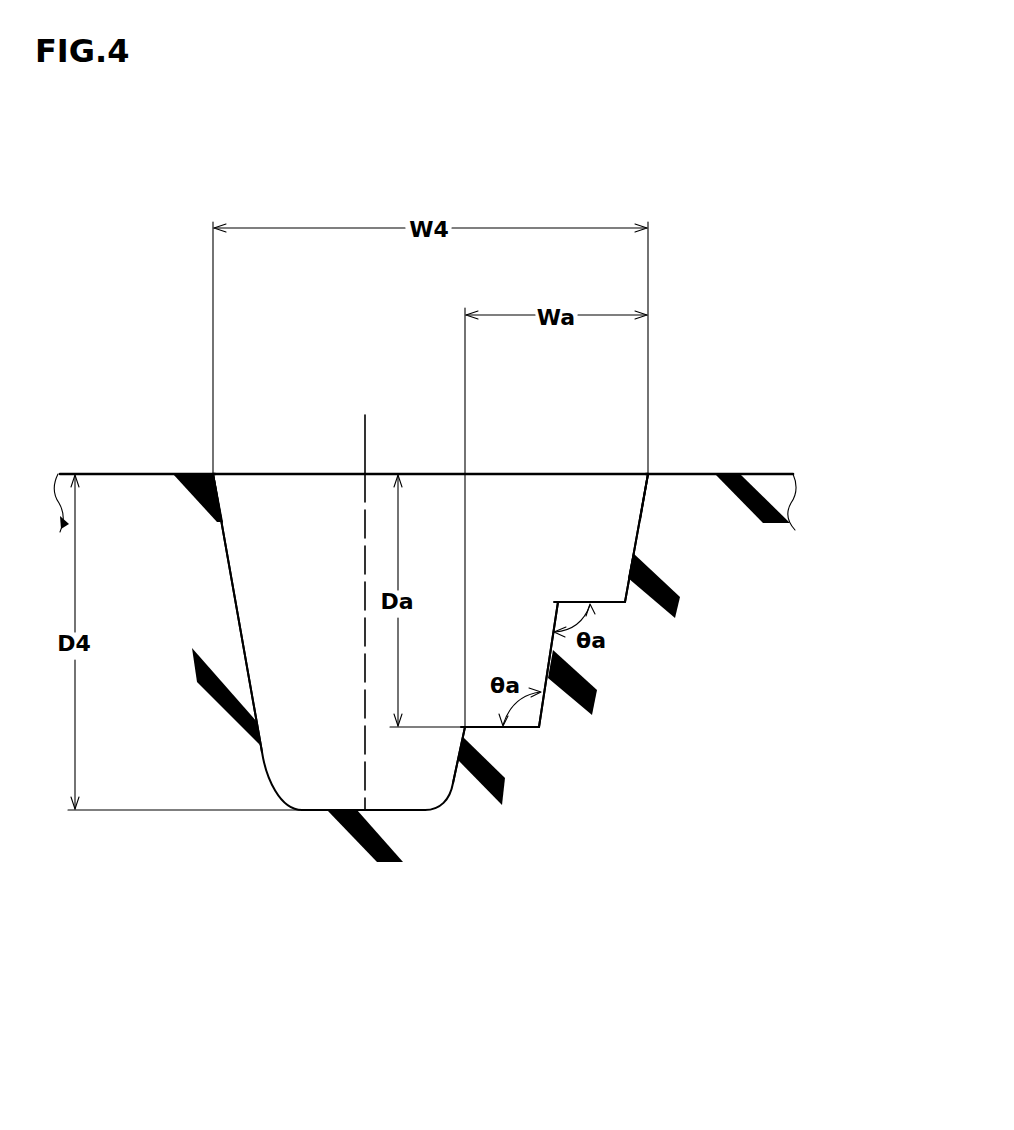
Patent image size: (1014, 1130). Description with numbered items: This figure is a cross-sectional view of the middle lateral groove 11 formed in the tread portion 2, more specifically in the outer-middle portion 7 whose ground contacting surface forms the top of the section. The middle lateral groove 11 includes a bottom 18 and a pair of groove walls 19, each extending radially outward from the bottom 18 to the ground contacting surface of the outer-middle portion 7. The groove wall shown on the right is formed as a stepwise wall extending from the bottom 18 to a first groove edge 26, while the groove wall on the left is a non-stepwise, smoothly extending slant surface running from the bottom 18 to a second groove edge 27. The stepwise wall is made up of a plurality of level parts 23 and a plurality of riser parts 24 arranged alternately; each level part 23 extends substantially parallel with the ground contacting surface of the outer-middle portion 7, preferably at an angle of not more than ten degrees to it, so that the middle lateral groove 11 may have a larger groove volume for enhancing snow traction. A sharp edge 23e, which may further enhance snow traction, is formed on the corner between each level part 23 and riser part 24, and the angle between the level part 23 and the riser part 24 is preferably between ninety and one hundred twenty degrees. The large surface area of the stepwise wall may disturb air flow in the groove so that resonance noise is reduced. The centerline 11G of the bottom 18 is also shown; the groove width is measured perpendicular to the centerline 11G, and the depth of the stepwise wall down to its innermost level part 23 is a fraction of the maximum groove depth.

The tread portion 2 is at (138, 473).
The outer-middle portion 7 is at (733, 473).
The middle lateral groove 11 is at (282, 527).
The centerline 11G is at (365, 445).
The bottom 18 is at (337, 810).
The groove walls 19 is at (238, 618).
The level part 23 is at (476, 727).
The sharp edge 23e is at (463, 727).
The riser parts 24 is at (458, 768).
The first groove edge 26 is at (648, 474).
The second groove edge 27 is at (213, 473).